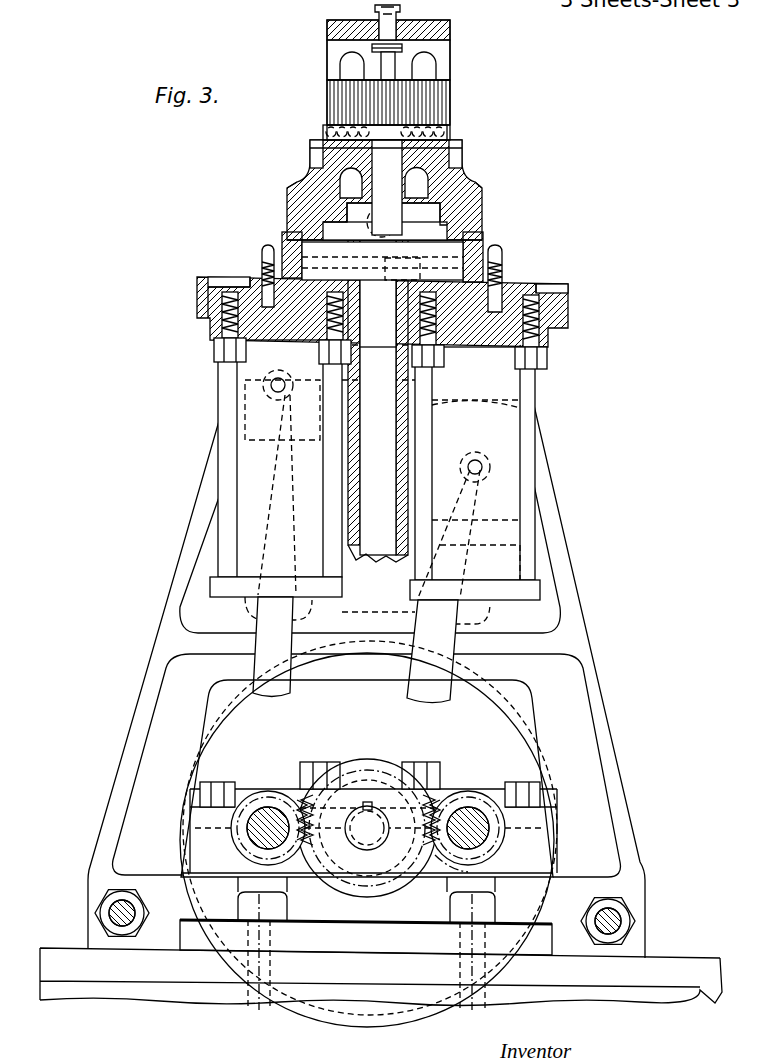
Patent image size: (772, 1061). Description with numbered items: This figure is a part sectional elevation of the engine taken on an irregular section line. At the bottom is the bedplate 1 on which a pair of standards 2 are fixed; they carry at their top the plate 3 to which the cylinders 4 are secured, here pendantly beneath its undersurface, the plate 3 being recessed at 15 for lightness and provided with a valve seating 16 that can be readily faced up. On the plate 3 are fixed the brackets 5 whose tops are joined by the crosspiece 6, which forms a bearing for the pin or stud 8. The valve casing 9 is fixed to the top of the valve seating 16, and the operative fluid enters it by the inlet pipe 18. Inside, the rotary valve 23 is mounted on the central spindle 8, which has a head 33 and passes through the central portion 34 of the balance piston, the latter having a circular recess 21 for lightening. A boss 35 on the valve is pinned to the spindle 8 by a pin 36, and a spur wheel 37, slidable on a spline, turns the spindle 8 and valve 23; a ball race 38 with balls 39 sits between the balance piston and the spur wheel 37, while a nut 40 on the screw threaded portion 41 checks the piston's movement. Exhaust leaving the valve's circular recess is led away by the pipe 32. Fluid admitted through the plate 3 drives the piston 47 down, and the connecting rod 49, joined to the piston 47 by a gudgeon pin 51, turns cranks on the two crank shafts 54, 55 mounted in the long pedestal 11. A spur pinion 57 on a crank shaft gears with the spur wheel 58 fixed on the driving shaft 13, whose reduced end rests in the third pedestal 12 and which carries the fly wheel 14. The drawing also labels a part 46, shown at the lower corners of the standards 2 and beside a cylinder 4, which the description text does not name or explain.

The bedplate 1 is at (702, 958).
The standards 2 is at (205, 480).
The plate 3 is at (197, 300).
The cylinder 4 is at (375, 482).
The brackets 5 is at (530, 262).
The crosspiece 6 is at (327, 33).
The pin or stud 8 is at (400, 22).
The valve casing 9 is at (310, 157).
The long pedestal 11 is at (200, 816).
The third pedestal 12 is at (390, 790).
The shaft 13 is at (367, 826).
The fly wheel 14 is at (218, 722).
The recess 15 is at (200, 284).
The valve seating 16 is at (262, 282).
The inlet pipe 18 is at (406, 231).
The circular recess 21 is at (384, 183).
The rotary valve 23 is at (382, 257).
The pipe 32 is at (360, 306).
The head 33 is at (402, 271).
The central portion 34 is at (287, 198).
The boss 35 is at (410, 220).
The pin 36 is at (373, 222).
The spur wheel 37 is at (327, 101).
The ball race 38 is at (323, 135).
The balls 39 is at (462, 135).
The nut 40 is at (396, 70).
The screw threaded portion 41 is at (402, 48).
The bolt 46 is at (112, 914).
The piston 47 is at (480, 388).
The connecting rod 49 is at (354, 650).
The gudgeon pin 51 is at (275, 390).
The crank shaft 54 is at (475, 868).
The crank shaft 55 is at (278, 800).
The spur pinion 57 is at (488, 848).
The spur wheel 58 is at (367, 838).